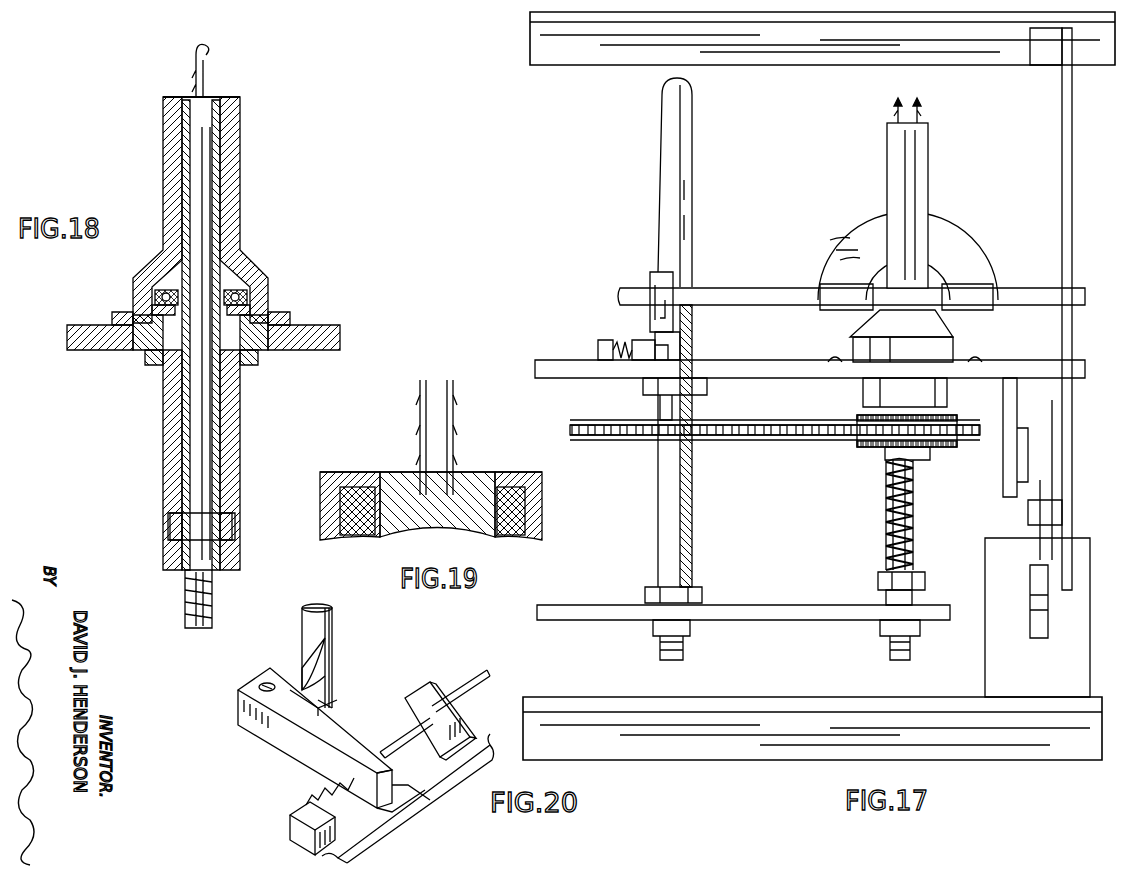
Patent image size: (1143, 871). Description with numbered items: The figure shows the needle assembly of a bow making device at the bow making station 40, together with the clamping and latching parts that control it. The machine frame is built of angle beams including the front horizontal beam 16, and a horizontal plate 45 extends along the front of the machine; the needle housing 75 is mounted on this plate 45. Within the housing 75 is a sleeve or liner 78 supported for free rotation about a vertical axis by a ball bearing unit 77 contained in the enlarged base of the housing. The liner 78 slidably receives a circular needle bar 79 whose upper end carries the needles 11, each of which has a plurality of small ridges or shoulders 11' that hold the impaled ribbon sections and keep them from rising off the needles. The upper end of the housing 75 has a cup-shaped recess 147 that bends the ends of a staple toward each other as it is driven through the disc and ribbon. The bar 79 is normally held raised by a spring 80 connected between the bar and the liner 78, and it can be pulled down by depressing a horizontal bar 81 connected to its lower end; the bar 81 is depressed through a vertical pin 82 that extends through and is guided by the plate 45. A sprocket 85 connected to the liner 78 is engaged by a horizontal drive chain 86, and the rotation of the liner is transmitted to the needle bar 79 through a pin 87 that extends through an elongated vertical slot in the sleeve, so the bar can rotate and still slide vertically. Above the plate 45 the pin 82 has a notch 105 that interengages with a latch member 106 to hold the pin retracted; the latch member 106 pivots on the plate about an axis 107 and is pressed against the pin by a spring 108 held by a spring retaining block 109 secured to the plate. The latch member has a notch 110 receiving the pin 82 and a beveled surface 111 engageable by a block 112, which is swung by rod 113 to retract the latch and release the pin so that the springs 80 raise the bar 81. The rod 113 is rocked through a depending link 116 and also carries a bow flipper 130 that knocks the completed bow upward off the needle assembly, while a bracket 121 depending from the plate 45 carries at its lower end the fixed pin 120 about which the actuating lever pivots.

In FIG. 18, the needles 11 is at (184, 68).
In FIG. 19, the needles 11 is at (438, 425).
In FIG. 17, the needles 11 is at (925, 103).
In FIG. 19, the ridges or shoulders 11' is at (482, 427).
In FIG. 17, the top horizontal beams 16 is at (680, 697).
In FIG. 17, the bow making station 40 is at (849, 163).
In FIG. 18, the horizontal plate 45 is at (305, 325).
In FIG. 20, the horizontal plate 45 is at (390, 832).
In FIG. 17, the horizontal plate 45 is at (765, 372).
In FIG. 18, the housing 75 is at (240, 190).
In FIG. 19, the housing 75 is at (538, 512).
In FIG. 17, the housing 75 is at (928, 166).
In FIG. 18, the ball bearing unit 77 is at (240, 300).
In FIG. 18, the sleeve or liner 78 is at (222, 420).
In FIG. 19, the sleeve or liner 78 is at (506, 530).
In FIG. 17, the sleeve or liner 78 is at (915, 546).
In FIG. 18, the circular bar 79 is at (207, 480).
In FIG. 19, the circular bar 79 is at (462, 532).
In FIG. 17, the circular bar 79 is at (912, 650).
In FIG. 17, the spring 80 is at (918, 506).
In FIG. 17, the horizontal bar 81 is at (795, 610).
In FIG. 20, the pin 82 is at (333, 630).
In FIG. 17, the pin 82 is at (692, 150).
In FIG. 17, the sprocket 85 is at (955, 418).
In FIG. 17, the drive chain 86 is at (735, 420).
In FIG. 17, the pin 87 is at (915, 472).
In FIG. 20, the notch 105 is at (304, 648).
In FIG. 17, the notch 105 is at (659, 255).
In FIG. 20, the latch member 106 is at (300, 745).
In FIG. 17, the latch member 106 is at (640, 355).
In FIG. 20, the axis 107 is at (262, 684).
In FIG. 20, the spring 108 is at (318, 800).
In FIG. 17, the spring 108 is at (622, 355).
In FIG. 20, the spring retaining block 109 is at (292, 834).
In FIG. 17, the spring retaining block 109 is at (598, 350).
In FIG. 20, the notch 110 is at (328, 700).
In FIG. 20, the beveled surface 111 is at (428, 800).
In FIG. 17, the beveled surface 111 is at (680, 352).
In FIG. 20, the block 112 is at (462, 716).
In FIG. 17, the block 112 is at (650, 276).
In FIG. 20, the rod 113 is at (468, 672).
In FIG. 17, the rod 113 is at (735, 292).
In FIG. 17, the depending link 116 is at (1072, 335).
In FIG. 17, the fixed pin 120 is at (1028, 495).
In FIG. 17, the bracket 121 is at (1003, 460).
In FIG. 17, the bow flipper 130 is at (948, 230).
In FIG. 18, the cup-shaped recess 147 is at (215, 100).
In FIG. 19, the cup-shaped recess 147 is at (518, 482).